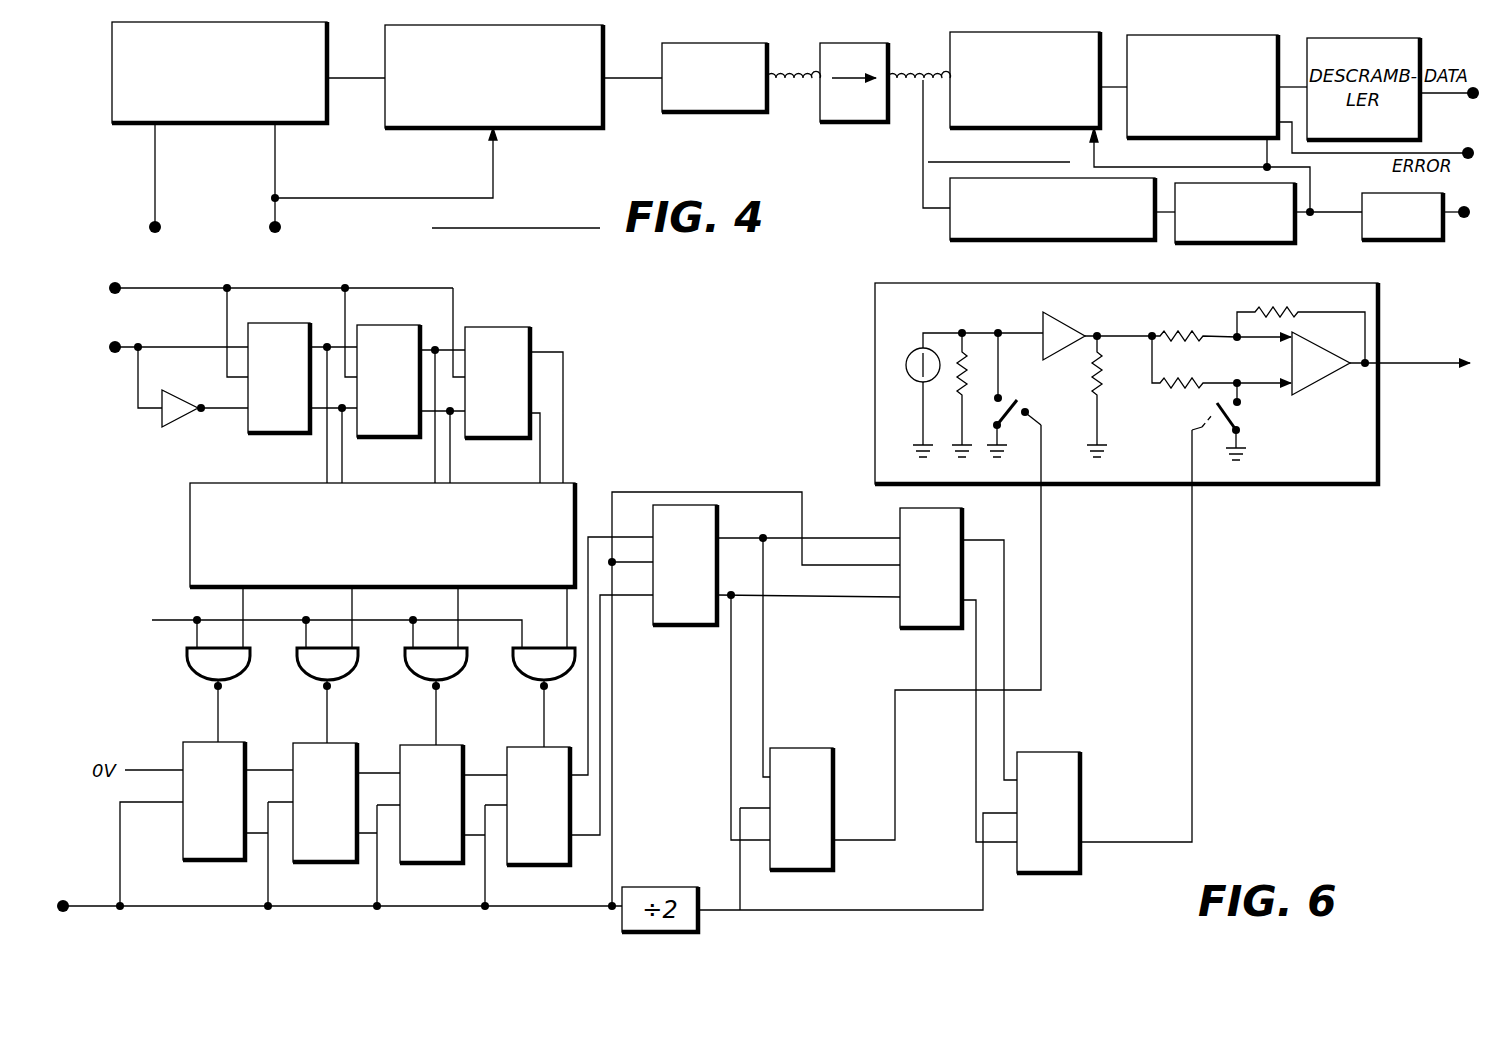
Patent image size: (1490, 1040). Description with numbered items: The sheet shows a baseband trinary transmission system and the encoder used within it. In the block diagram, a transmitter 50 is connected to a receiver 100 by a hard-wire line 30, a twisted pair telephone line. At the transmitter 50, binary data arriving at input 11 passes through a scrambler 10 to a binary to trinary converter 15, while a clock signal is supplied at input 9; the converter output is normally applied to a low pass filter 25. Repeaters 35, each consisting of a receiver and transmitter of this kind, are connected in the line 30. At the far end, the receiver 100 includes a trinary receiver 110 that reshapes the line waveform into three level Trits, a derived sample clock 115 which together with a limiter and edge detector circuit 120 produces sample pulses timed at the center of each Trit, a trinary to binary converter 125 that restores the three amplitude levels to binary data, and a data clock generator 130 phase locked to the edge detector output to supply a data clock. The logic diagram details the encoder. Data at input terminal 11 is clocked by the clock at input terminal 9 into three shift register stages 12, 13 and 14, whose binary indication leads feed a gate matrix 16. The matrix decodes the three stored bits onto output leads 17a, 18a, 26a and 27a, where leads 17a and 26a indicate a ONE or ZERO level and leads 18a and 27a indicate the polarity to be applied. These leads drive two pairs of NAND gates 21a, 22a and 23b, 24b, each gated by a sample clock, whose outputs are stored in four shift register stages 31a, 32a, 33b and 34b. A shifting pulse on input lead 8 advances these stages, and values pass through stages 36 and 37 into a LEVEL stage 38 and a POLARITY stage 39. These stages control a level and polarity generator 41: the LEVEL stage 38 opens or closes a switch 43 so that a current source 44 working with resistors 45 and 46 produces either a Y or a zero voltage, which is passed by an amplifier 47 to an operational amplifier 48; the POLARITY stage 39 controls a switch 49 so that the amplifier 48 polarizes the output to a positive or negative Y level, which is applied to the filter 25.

In FIG. 6, the input lead 8 is at (92, 905).
In FIG. 4, the clock input terminal 9 is at (282, 225).
In FIG. 6, the clock input terminal 9 is at (114, 280).
In FIG. 4, the scrambler 10 is at (302, 124).
In FIG. 4, the data input terminal 11 is at (162, 224).
In FIG. 6, the data input terminal 11 is at (110, 352).
In FIG. 6, the shift register stage 12 is at (240, 438).
In FIG. 6, the shift register stage 13 is at (396, 440).
In FIG. 6, the shift register stage 14 is at (502, 440).
In FIG. 4, the binary to trinary converter 15 is at (520, 130).
In FIG. 6, the gate matrix 16 is at (382, 535).
In FIG. 6, the output lead 17a is at (244, 600).
In FIG. 6, the output lead 18a is at (353, 607).
In FIG. 6, the NAND gate 21a is at (200, 673).
In FIG. 6, the NAND gate 22a is at (306, 673).
In FIG. 6, the NAND gate 23b is at (414, 673).
In FIG. 6, the NAND gate 24b is at (522, 673).
In FIG. 4, the low pass filter 25 is at (695, 113).
In FIG. 6, the output lead 26a is at (459, 608).
In FIG. 6, the output lead 27a is at (566, 626).
In FIG. 4, the hard-wire communication line 30 is at (795, 82).
In FIG. 6, the shift register stage 31a is at (212, 862).
In FIG. 6, the shift register stage 32a is at (330, 864).
In FIG. 6, the shift register stage 33b is at (440, 865).
In FIG. 6, the shift register stage 34b is at (545, 867).
In FIG. 4, the repeater 35 is at (858, 123).
In FIG. 6, the shift register stage 36 is at (680, 505).
In FIG. 6, the shift register stage 37 is at (900, 522).
In FIG. 6, the LEVEL stage 38 is at (833, 860).
In FIG. 6, the POLARITY stage 39 is at (1082, 783).
In FIG. 6, the level and polarity generator 41 is at (1250, 486).
In FIG. 6, the switch 43 is at (1012, 402).
In FIG. 6, the current source 44 is at (906, 360).
In FIG. 6, the resistor 45 is at (970, 365).
In FIG. 6, the resistor 46 is at (1102, 380).
In FIG. 6, the amplifier 47 is at (1072, 318).
In FIG. 6, the operational amplifier 48 is at (1312, 385).
In FIG. 6, the switch 49 is at (1225, 415).
In FIG. 4, the transmitter 50 is at (516, 217).
In FIG. 4, the receiver 100 is at (999, 151).
In FIG. 4, the trinary receiver 110 is at (960, 28).
In FIG. 4, the derived sample clock 115 is at (950, 220).
In FIG. 4, the limiter and edge detector circuit 120 is at (1296, 188).
In FIG. 4, the trinary to binary converter 125 is at (1192, 139).
In FIG. 4, the data clock generator 130 is at (1360, 222).